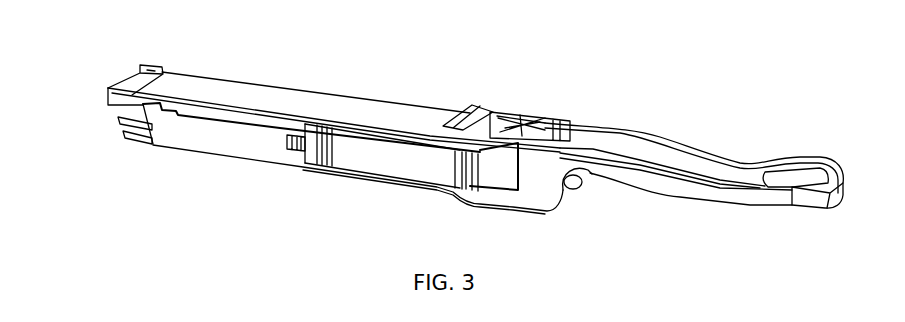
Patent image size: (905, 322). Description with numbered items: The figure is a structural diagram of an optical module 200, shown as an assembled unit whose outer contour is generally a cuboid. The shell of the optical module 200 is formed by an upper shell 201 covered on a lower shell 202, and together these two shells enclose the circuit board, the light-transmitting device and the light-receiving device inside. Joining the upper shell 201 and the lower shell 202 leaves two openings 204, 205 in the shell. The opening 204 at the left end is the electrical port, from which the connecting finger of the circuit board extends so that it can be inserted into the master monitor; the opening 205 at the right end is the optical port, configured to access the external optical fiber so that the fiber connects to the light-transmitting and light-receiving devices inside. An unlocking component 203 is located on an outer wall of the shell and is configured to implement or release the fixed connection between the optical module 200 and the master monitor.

The optical module 200 is at (259, 68).
The upper shell 201 is at (300, 95).
The lower shell 202 is at (241, 148).
The unlocking component 203 is at (630, 182).
The opening (electrical port) 204 is at (118, 131).
The opening (optical port) 205 is at (518, 128).